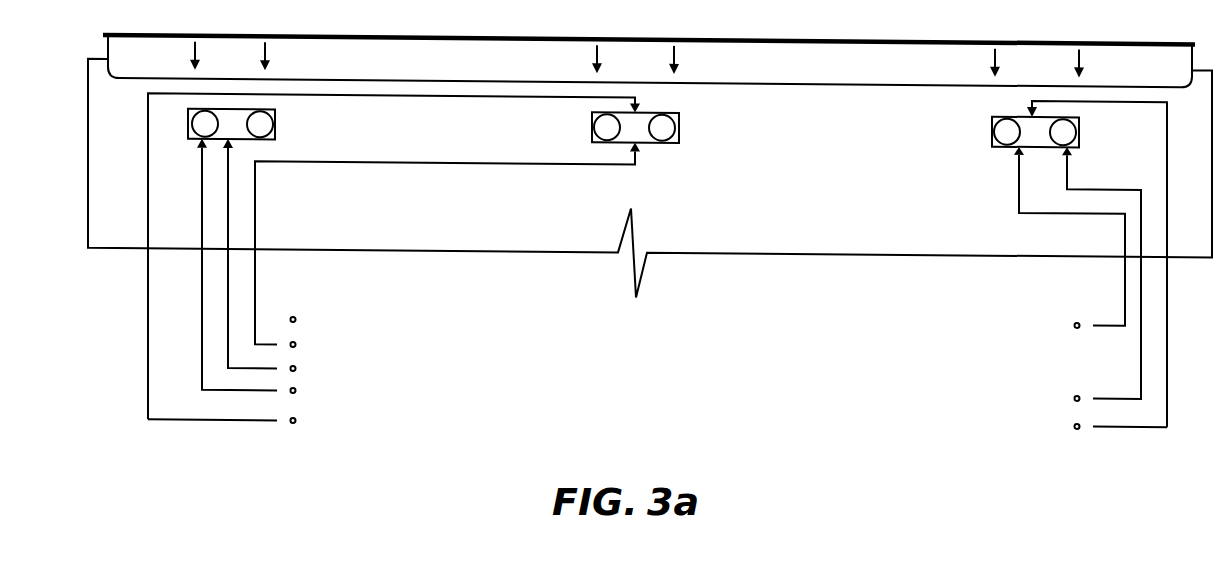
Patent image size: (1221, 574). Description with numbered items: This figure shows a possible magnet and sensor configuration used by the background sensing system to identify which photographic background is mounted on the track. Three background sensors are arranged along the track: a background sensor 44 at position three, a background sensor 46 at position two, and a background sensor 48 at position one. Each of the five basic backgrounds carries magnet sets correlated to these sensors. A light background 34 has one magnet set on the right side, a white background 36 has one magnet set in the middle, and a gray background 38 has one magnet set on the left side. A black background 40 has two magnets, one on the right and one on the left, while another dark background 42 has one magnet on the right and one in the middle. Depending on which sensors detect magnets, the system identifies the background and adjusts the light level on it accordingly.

The light background 34 is at (1075, 318).
The white background 36 is at (296, 341).
The gray background 38 is at (296, 365).
The black background 40 is at (296, 387).
The other dark background 42 is at (296, 418).
The background sensor 44 is at (992, 121).
The background sensor 46 is at (679, 119).
The background sensor 48 is at (275, 116).